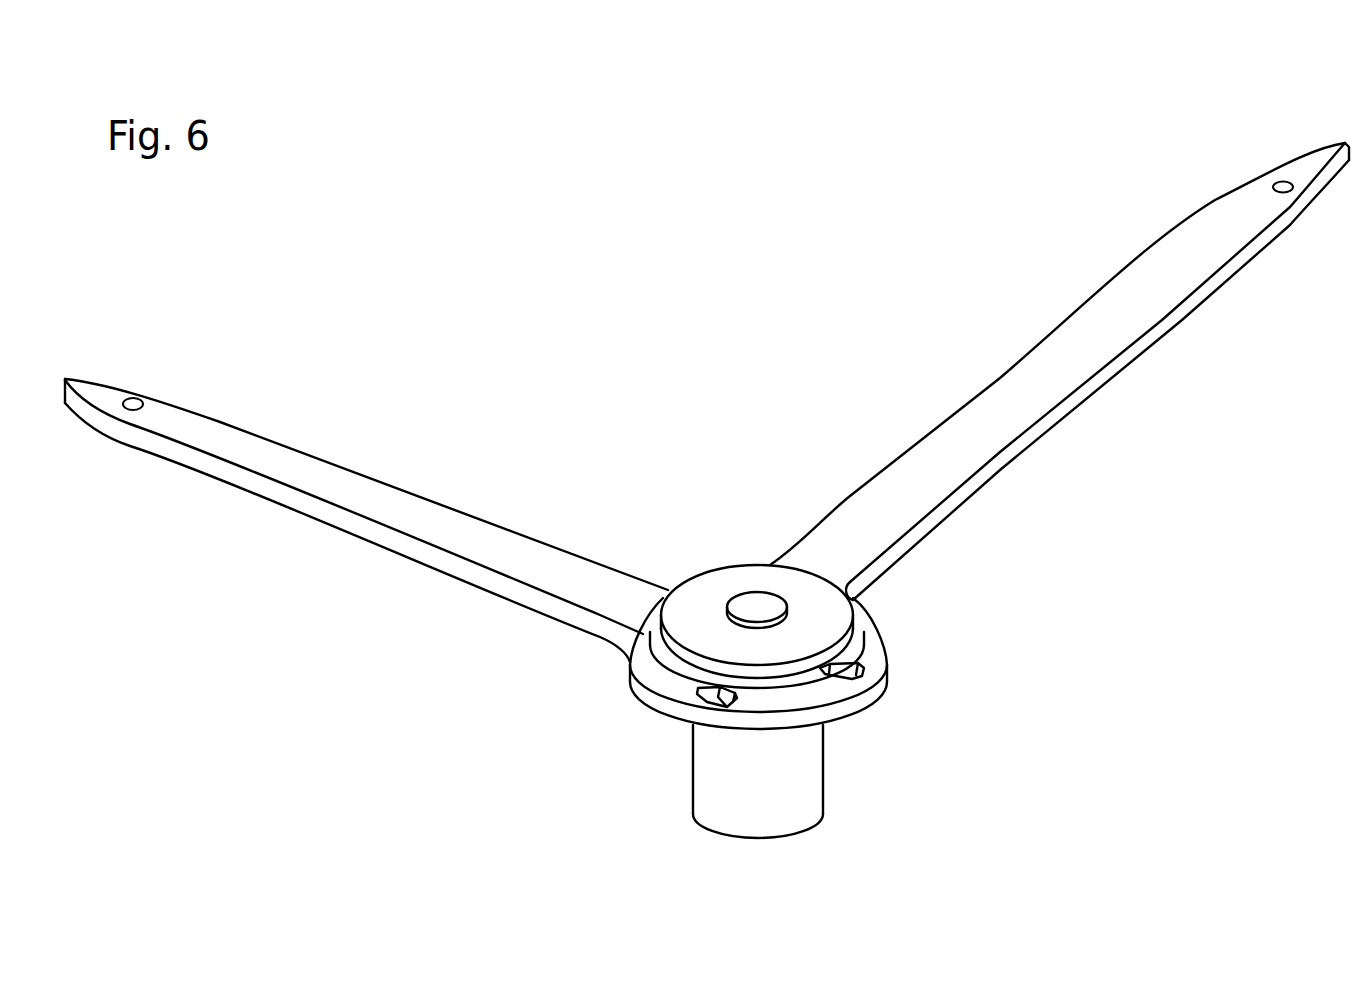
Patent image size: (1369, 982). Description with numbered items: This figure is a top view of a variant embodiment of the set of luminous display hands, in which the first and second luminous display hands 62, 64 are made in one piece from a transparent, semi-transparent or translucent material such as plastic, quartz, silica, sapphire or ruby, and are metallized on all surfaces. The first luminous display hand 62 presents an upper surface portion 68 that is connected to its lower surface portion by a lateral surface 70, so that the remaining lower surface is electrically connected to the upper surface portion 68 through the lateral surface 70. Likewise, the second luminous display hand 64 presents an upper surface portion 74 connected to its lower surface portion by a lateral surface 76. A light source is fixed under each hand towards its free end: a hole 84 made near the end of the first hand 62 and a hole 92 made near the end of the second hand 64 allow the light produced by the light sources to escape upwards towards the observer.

The first luminous display hand 62 is at (366, 498).
The second luminous display hand 64 is at (1059, 351).
The upper surface portion 68 is at (511, 548).
The lateral surface 70 is at (382, 528).
The upper surface portion 74 is at (1001, 423).
The lateral surface 76 is at (1201, 305).
The hole 84 is at (135, 404).
The hole 92 is at (1283, 187).